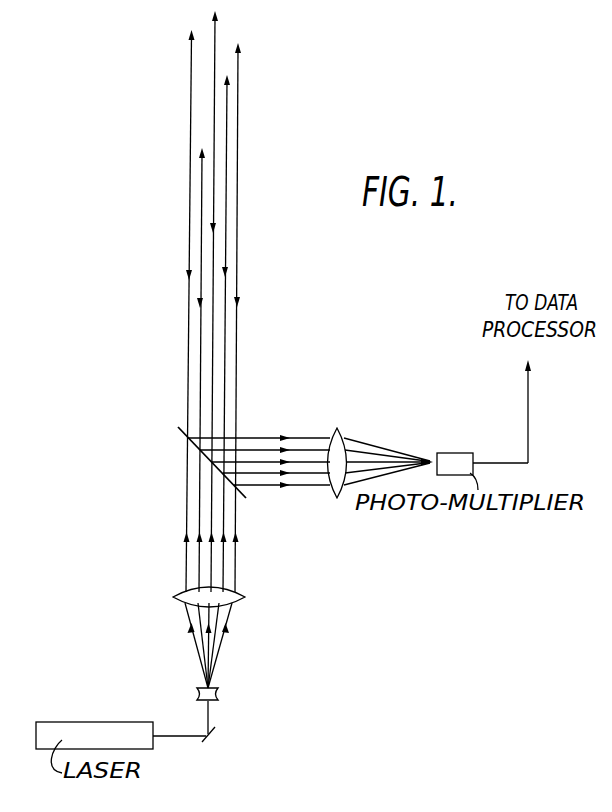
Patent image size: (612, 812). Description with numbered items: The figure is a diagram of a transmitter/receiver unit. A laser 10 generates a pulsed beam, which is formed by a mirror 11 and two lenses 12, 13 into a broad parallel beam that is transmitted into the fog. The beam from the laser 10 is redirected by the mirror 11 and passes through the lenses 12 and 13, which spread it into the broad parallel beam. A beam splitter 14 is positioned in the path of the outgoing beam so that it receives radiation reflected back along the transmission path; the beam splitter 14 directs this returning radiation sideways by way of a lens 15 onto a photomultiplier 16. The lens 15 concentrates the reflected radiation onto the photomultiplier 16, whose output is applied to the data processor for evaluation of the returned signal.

The laser 10 is at (105, 722).
The mirror 11 is at (218, 732).
The lens 12 is at (220, 693).
The lens 13 is at (240, 592).
The beam splitter 14 is at (178, 427).
The lens 15 is at (343, 433).
The photomultiplier 16 is at (454, 453).